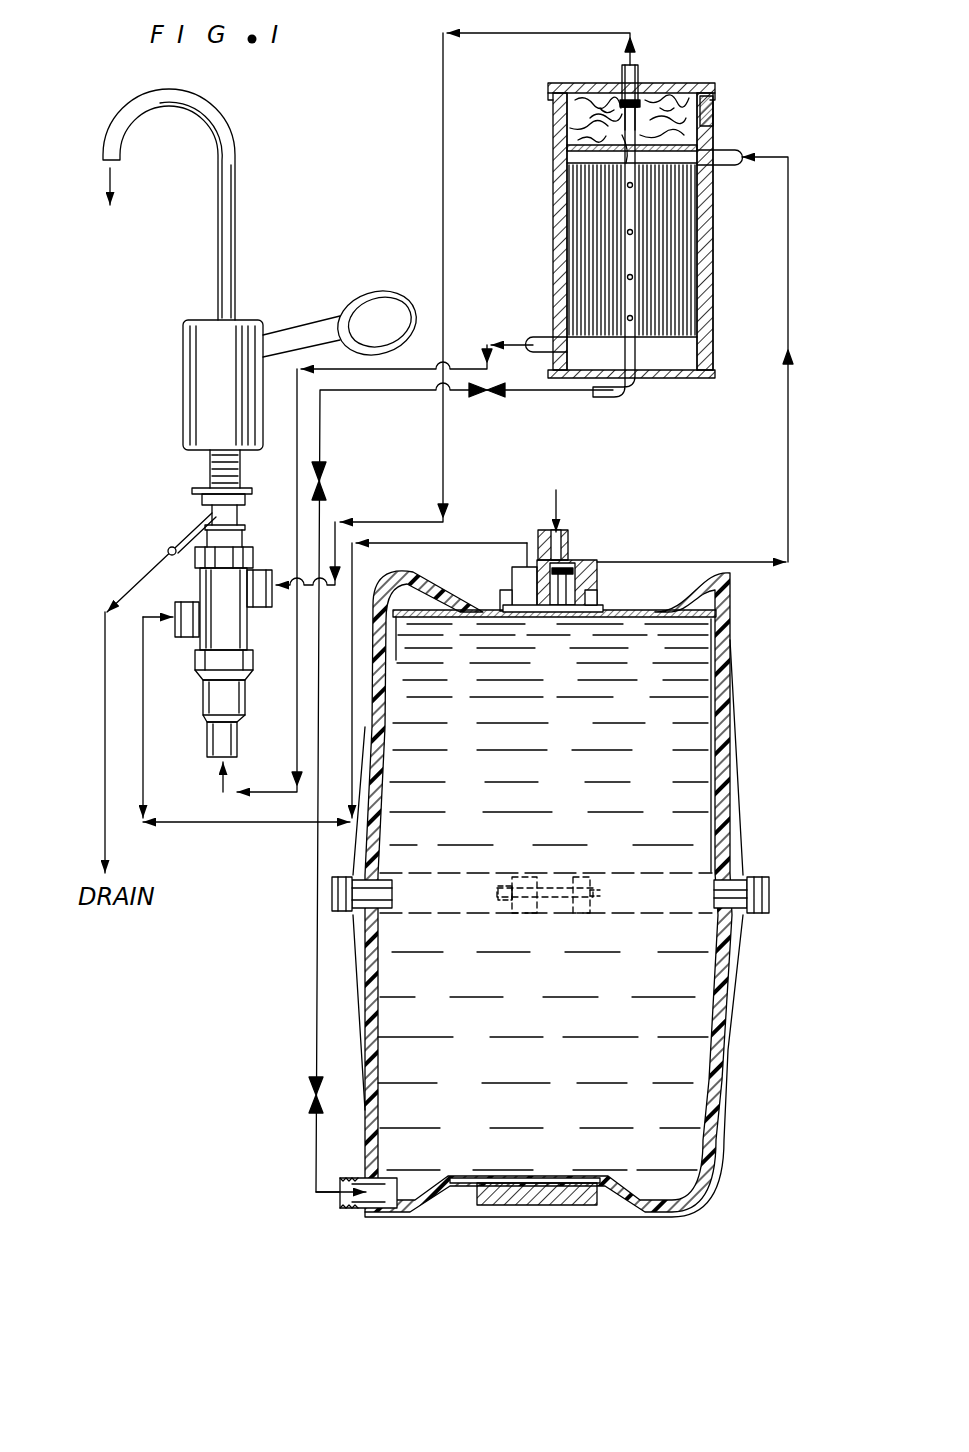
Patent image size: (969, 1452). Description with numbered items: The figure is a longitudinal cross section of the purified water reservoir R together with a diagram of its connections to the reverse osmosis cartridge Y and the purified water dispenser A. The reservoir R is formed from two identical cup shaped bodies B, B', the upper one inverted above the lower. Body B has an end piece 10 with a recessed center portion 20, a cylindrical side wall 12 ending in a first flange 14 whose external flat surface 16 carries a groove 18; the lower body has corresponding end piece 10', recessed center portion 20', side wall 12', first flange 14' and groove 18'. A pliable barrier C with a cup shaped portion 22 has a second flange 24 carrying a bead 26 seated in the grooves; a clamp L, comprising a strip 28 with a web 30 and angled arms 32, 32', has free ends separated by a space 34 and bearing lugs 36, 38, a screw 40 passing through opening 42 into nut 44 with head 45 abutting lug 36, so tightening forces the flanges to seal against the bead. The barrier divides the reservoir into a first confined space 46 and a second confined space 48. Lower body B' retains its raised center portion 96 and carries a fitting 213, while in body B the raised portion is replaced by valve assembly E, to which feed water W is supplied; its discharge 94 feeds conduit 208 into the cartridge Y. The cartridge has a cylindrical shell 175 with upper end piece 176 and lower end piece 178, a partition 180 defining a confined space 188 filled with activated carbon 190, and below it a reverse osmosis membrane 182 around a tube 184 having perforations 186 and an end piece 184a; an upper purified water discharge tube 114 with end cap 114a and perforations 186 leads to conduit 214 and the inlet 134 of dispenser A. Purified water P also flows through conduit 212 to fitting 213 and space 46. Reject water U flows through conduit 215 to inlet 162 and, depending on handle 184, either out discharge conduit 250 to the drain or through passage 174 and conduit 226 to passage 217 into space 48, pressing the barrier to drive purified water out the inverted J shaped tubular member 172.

The inverted J shaped tubular member 172 is at (236, 190).
The purified water P is at (565, 784).
The purified water dispenser A is at (183, 376).
The tube 184 is at (312, 330).
The discharge conduit 250 is at (205, 530).
The inlet 134 is at (258, 570).
The passage 174 is at (186, 640).
The inlet 162 is at (226, 758).
The conduit 214 is at (443, 185).
The reject water U is at (405, 369).
The conduit 215 is at (297, 431).
The conduit 212 is at (528, 392).
The conduit 208 is at (788, 268).
The conduit 226 is at (198, 822).
The passage 217 is at (512, 582).
The reverse osmosis cartridge Y is at (553, 236).
The upper end piece 176 is at (698, 88).
The lower end piece 178 is at (668, 378).
The confined space 188 is at (713, 110).
The activated carbon 190 is at (714, 96).
The end piece 184a is at (625, 138).
The reverse osmosis membrane 182 is at (686, 190).
The cylindrical shell 175 is at (710, 280).
The partition 180 is at (716, 145).
The upper purified water discharge tube 114 is at (624, 68).
The end cap 114a is at (622, 92).
The perforations 186 is at (638, 72).
The cup shaped body B is at (568, 891).
The side wall 12 is at (564, 757).
The side wall 12' is at (565, 1066).
The cup shaped body B' is at (746, 1022).
The pliable barrier C is at (393, 714).
The cup shaped portion 22 is at (388, 742).
The end piece 10 is at (440, 565).
The recessed center portion 20 is at (655, 584).
The second confined space 48 is at (730, 590).
The purified water reservoir R is at (736, 690).
The first confined space 46 is at (610, 1031).
The space 34 is at (558, 913).
The screw 40 is at (548, 888).
The lug 38 is at (515, 877).
The lug 36 is at (585, 877).
The nut 44 is at (500, 900).
The opening 42 is at (514, 904).
The head 45 is at (598, 892).
The discharge 94 is at (568, 555).
The feed water W is at (552, 504).
The valve assembly E is at (602, 560).
The second flange 24 is at (385, 894).
The arm 32 is at (338, 857).
The strip 28 is at (332, 880).
The clamp L is at (332, 894).
The web 30 is at (336, 906).
The arm 32' is at (314, 935).
The bead 26 is at (362, 914).
The external flat surface 16 is at (769, 893).
The first flange 14 is at (765, 858).
The groove 18 is at (757, 836).
The first flange 14' is at (779, 927).
The groove 18' is at (765, 943).
The fitting 213 is at (342, 1206).
The raised center portion 96 is at (520, 1206).
The end piece 10' is at (450, 1228).
The recessed center portion 20' is at (630, 1228).